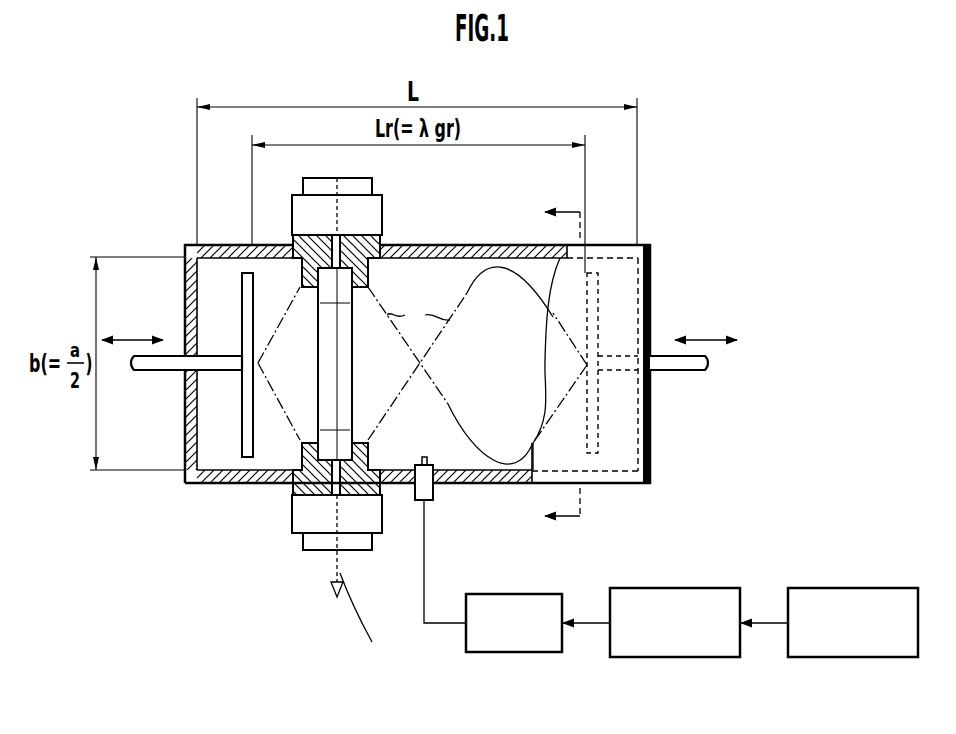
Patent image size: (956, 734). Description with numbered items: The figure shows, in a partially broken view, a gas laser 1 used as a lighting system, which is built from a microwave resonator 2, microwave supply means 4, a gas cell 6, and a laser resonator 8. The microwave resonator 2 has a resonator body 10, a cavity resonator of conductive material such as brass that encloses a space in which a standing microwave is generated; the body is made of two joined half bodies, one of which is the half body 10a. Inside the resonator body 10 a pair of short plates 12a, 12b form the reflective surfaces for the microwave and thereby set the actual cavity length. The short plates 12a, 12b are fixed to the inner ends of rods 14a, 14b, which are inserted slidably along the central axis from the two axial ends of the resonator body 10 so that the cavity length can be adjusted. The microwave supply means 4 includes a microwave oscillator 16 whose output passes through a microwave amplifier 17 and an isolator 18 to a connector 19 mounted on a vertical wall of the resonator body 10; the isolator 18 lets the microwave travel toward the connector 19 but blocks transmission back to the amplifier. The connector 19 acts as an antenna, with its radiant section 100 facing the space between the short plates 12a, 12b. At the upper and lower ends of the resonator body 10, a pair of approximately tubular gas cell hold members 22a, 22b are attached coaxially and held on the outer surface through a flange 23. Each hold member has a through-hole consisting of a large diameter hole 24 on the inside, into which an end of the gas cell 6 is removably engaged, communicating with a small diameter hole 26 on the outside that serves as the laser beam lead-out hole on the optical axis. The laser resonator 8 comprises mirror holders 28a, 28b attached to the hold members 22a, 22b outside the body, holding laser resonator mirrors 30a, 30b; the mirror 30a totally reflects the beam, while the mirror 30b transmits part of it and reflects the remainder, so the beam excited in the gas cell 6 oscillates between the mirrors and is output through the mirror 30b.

The gas laser 1 is at (673, 212).
The microwave resonator 2 is at (444, 237).
The microwave supply means 4 is at (656, 668).
The gas cell 6 is at (318, 393).
The laser resonator 8 is at (297, 554).
The resonator body 10 is at (417, 364).
The half body 10a is at (497, 245).
The short plate 12a is at (240, 287).
The short plate 12b is at (598, 340).
The rod 14a is at (160, 373).
The rod 14b is at (680, 372).
The microwave oscillator 16 is at (866, 588).
The microwave amplifier 17 is at (708, 588).
The isolator 18 is at (540, 594).
The connector 19 is at (433, 490).
The gas cell hold member 22a is at (370, 275).
The gas cell hold member 22b is at (372, 460).
The flange 23 is at (290, 238).
The large diameter hole 24 is at (353, 304).
The small diameter hole 26 is at (337, 250).
The mirror holder 28a is at (290, 202).
The mirror holder 28b is at (383, 520).
The laser resonator mirror 30a is at (358, 177).
The laser resonator mirror 30b is at (318, 552).
The radiant section 100 is at (447, 440).